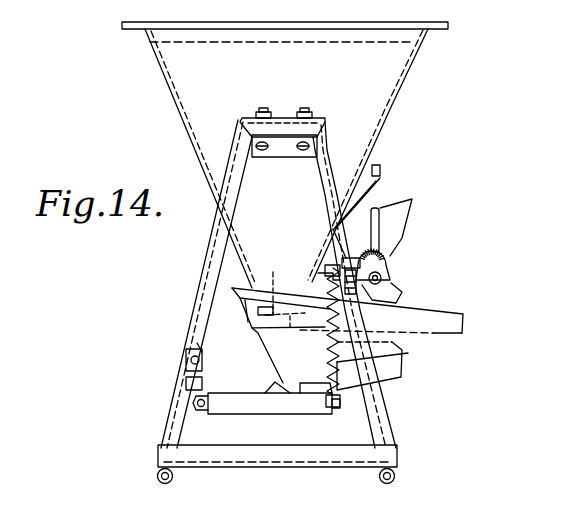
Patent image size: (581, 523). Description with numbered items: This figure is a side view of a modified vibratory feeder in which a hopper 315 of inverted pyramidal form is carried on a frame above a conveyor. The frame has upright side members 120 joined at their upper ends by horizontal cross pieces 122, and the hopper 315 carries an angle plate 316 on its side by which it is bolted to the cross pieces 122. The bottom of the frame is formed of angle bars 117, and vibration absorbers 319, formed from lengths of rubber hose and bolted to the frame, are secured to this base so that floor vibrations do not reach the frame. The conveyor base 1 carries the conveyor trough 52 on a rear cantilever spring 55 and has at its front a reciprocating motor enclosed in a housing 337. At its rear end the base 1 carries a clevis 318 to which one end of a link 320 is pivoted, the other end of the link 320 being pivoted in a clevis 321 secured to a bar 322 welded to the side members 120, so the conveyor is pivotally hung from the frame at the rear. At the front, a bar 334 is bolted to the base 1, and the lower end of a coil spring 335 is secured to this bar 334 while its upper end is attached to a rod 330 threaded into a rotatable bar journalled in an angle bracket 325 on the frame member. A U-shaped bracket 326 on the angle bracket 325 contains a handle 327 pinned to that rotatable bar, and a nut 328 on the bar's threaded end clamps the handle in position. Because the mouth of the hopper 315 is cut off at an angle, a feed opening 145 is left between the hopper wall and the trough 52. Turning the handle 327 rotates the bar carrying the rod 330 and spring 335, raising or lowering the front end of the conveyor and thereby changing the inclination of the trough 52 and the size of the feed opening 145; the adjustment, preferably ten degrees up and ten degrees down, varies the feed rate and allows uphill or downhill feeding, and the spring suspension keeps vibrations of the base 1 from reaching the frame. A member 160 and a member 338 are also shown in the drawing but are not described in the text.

The conveyor base 1 is at (276, 402).
The conveyor trough 52 is at (463, 315).
The rear cantilever spring 55 is at (278, 362).
The angle bars 117 is at (331, 460).
The side members 120 is at (207, 254).
The cross pieces 122 is at (300, 128).
The feed opening 145 is at (291, 332).
The lever 160 is at (377, 190).
The hopper 315 is at (195, 85).
The angle plate 316 is at (288, 150).
The clevis 318 is at (195, 403).
The vibration absorbers 319 is at (174, 479).
The link 320 is at (195, 384).
The clevis 321 is at (205, 358).
The bar 322 is at (190, 358).
The angle bracket 325 is at (370, 303).
The U-shaped bracket 326 is at (390, 258).
The handle 327 is at (402, 203).
The nut 328 is at (382, 278).
The rod 330 is at (338, 234).
The bar 334 is at (341, 408).
The coil spring 335 is at (389, 352).
The housing 337 is at (401, 375).
The slide 338 is at (270, 283).